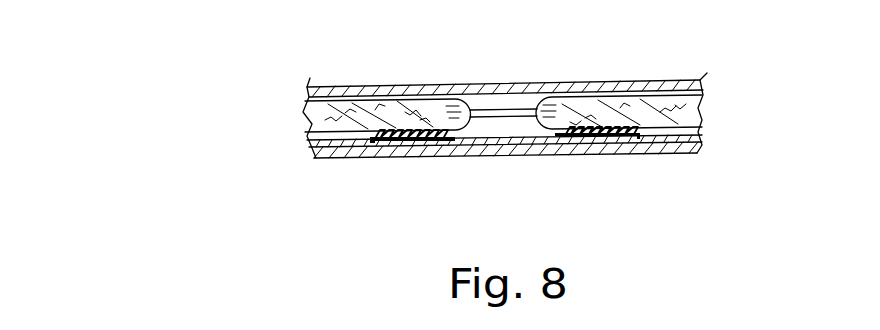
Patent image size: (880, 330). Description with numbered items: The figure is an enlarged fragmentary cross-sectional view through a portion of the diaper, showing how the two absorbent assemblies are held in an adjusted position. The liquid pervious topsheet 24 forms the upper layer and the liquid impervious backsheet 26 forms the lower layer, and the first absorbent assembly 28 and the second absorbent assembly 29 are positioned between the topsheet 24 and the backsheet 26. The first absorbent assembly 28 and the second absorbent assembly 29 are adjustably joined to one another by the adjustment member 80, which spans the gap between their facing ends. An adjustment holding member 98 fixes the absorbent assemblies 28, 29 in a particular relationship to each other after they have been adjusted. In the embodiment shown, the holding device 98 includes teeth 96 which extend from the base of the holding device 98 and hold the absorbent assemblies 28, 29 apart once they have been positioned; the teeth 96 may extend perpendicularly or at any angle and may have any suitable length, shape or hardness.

The topsheet 24 is at (503, 84).
The backsheet 26 is at (547, 157).
The first absorbent assembly 28 is at (306, 106).
The second absorbent assembly 29 is at (706, 114).
The adjustment member 80 is at (505, 118).
The teeth 96 is at (372, 141).
The adjustment holding member 98 is at (420, 138).